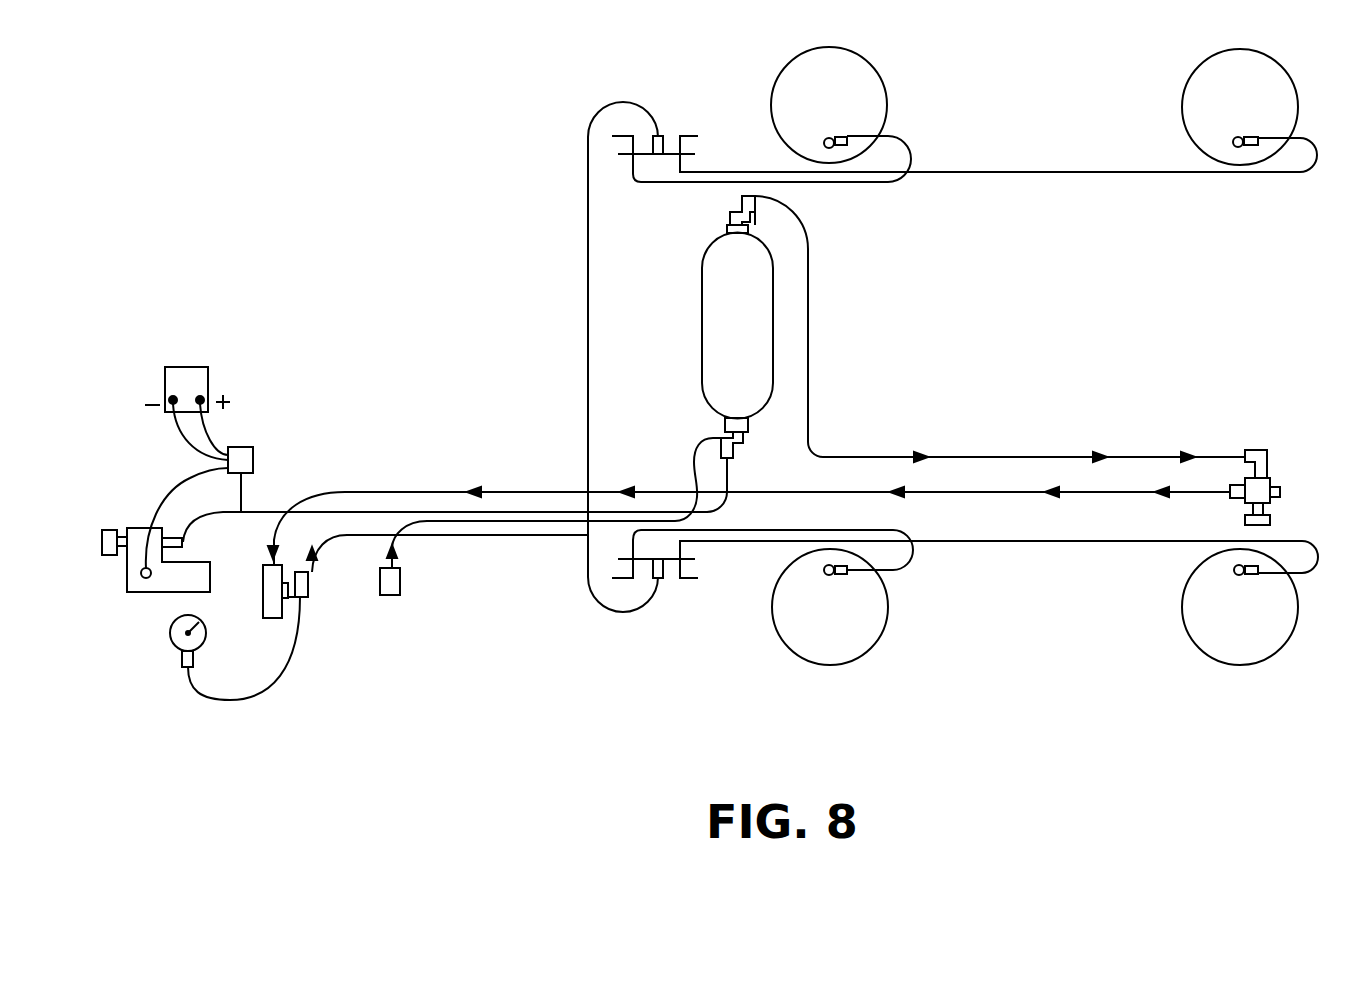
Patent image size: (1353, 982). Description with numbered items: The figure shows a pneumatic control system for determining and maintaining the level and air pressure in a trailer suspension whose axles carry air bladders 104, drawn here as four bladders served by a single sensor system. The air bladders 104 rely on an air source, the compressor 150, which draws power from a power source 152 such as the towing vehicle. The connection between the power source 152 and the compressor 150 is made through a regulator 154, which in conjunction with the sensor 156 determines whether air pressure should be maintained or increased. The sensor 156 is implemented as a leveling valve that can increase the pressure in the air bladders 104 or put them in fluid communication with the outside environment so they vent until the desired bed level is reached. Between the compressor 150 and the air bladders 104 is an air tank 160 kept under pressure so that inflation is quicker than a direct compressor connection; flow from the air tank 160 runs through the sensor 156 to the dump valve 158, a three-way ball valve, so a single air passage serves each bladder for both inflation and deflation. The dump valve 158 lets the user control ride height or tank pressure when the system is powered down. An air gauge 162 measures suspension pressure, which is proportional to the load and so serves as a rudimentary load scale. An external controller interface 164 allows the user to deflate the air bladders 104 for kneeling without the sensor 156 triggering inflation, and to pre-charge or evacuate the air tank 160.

The air bladders 104 is at (885, 83).
The compressor 150 is at (158, 592).
The power source 152 is at (187, 367).
The regulator 154 is at (250, 447).
The sensor 156 is at (1255, 450).
The dump valve 158 is at (308, 583).
The air tank 160 is at (767, 348).
The air gauge 162 is at (168, 637).
The external controller interface 164 is at (400, 585).